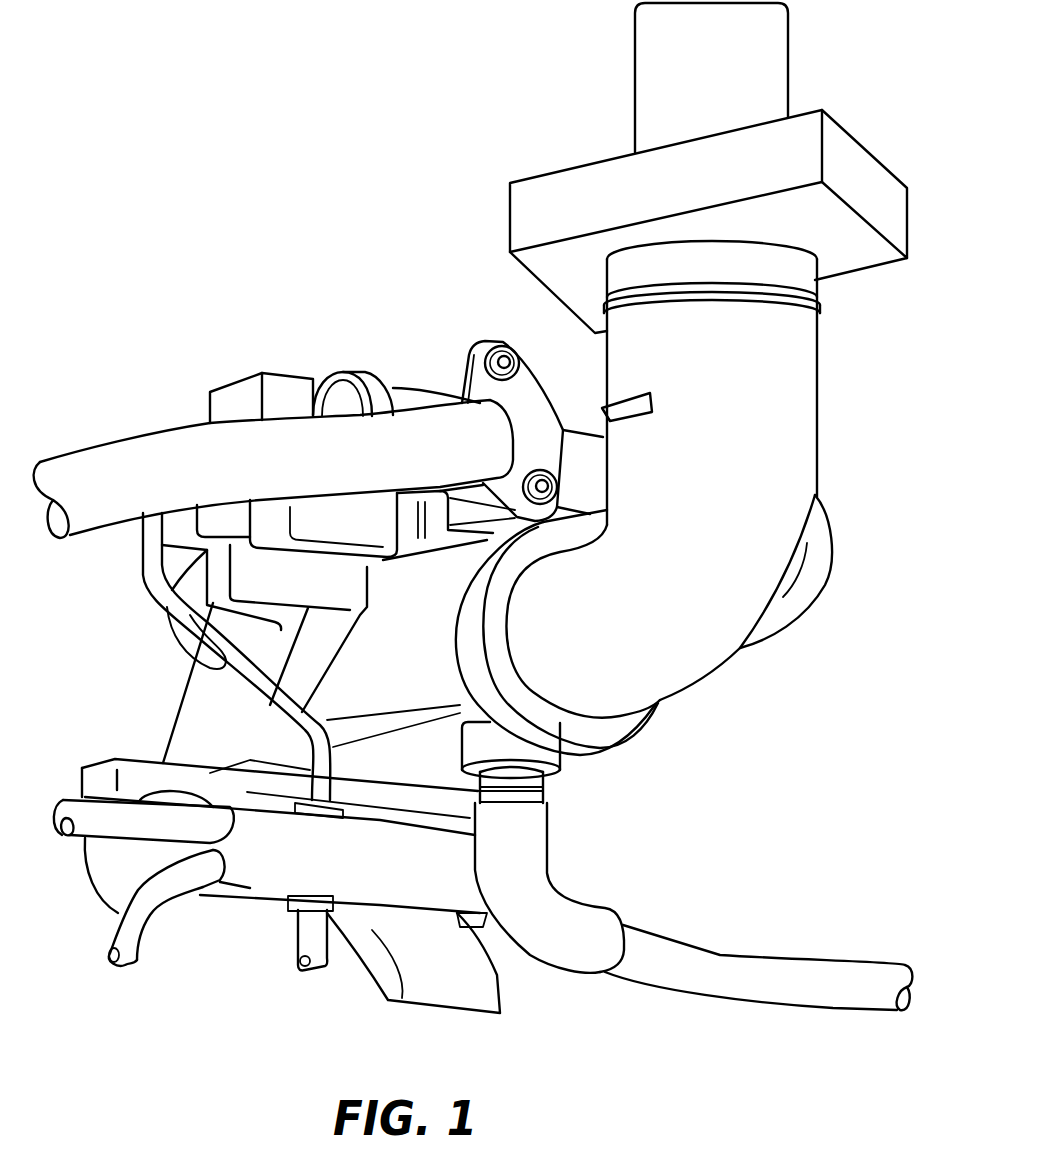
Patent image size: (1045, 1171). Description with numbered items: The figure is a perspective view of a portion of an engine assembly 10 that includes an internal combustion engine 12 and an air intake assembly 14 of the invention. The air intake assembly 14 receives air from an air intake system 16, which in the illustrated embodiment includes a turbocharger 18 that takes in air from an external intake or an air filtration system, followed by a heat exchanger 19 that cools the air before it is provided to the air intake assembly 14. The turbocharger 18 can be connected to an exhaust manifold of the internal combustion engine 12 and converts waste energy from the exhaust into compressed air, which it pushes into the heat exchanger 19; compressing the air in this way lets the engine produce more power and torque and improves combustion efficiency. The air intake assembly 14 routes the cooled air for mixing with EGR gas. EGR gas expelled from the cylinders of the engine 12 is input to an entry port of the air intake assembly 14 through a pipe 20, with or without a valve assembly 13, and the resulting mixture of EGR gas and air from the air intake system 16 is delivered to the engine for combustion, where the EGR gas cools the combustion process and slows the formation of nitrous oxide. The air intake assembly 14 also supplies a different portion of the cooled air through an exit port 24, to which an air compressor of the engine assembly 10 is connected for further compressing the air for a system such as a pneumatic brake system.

The engine assembly 10 is at (275, 112).
The internal combustion engine 12 is at (293, 342).
The valve assembly 13 is at (473, 340).
The air intake assembly 14 is at (642, 752).
The air intake system 16 is at (481, 112).
The turbocharger 18 is at (777, 62).
The heat exchanger 19 is at (860, 170).
The pipe 20 is at (153, 445).
The exit port 24 is at (537, 857).